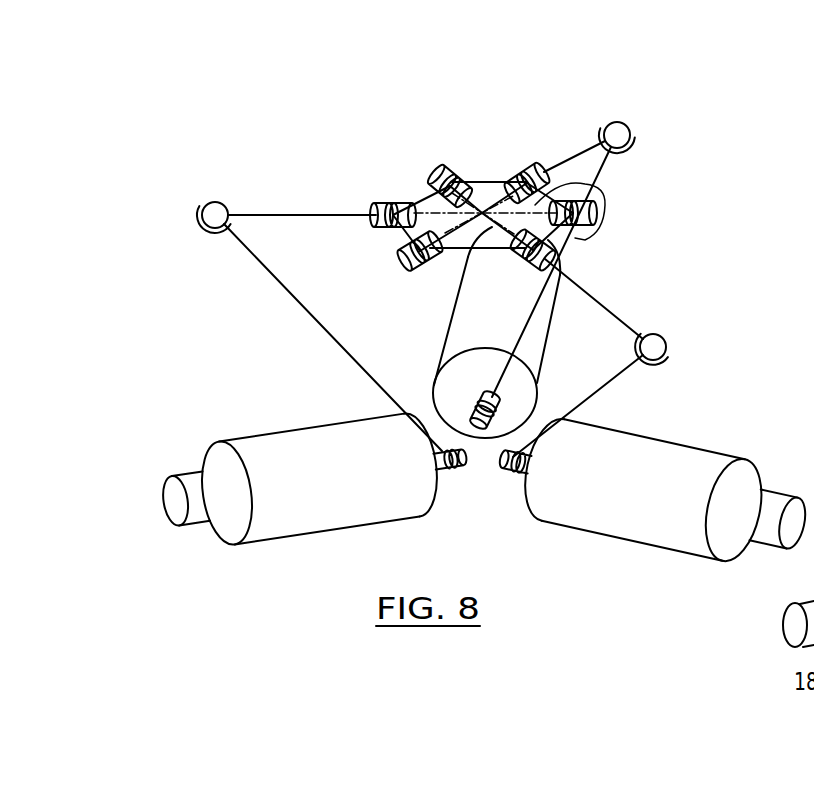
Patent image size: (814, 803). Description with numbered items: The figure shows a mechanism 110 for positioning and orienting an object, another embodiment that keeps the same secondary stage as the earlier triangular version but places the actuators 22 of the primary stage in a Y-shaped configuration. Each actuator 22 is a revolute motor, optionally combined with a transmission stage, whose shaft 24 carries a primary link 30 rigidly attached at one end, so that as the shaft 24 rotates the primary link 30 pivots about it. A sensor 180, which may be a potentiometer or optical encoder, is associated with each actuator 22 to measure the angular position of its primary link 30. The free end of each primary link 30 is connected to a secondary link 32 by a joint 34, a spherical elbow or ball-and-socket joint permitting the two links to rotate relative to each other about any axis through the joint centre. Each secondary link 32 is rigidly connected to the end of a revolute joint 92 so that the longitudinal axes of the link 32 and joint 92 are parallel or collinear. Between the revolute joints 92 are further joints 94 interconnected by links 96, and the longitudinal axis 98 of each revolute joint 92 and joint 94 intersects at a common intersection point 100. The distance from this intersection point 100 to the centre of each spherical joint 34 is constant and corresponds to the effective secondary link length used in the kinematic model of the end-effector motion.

The positioning mechanism 110 is at (507, 70).
The joint 34 is at (216, 202).
The secondary link 32 is at (319, 213).
The primary link 30 is at (318, 322).
The revolute joint 92 is at (377, 203).
The joint 94 is at (410, 260).
The link 96 is at (534, 172).
The longitudinal axis 98 is at (437, 182).
The intersection point 100 is at (484, 210).
The actuator 22 is at (335, 518).
The sensor 180 is at (197, 478).
The shaft 24 is at (482, 433).